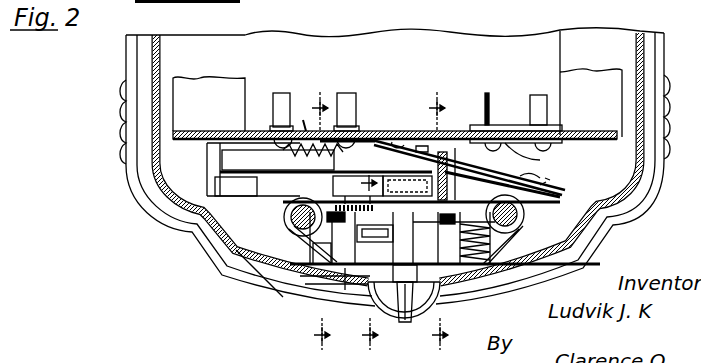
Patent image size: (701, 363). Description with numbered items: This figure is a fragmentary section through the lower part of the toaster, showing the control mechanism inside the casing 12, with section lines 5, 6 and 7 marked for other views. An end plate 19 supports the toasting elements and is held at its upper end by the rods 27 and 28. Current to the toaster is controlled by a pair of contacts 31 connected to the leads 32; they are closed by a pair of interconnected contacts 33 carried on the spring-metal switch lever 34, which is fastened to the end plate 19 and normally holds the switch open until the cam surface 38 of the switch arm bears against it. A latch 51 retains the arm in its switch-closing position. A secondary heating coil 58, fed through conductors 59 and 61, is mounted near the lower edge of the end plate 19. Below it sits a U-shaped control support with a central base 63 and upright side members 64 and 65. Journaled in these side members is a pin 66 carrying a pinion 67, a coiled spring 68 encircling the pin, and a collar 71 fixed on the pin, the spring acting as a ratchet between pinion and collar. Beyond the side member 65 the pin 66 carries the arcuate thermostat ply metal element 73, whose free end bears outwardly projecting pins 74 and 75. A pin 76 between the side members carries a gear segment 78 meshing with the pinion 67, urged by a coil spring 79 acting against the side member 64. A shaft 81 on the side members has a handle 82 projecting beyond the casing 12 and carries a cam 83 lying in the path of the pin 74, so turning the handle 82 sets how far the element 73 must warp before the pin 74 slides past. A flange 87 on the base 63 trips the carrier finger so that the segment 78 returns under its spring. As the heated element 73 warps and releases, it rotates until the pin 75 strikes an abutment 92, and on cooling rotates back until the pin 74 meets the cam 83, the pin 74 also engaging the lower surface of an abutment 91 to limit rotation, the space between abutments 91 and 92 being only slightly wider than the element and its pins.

The section line 5- 5 is at (316, 221).
The section line 6- 6 is at (365, 263).
The section line 7- 7 is at (436, 221).
The casing 12 is at (645, 187).
The end plate 19 is at (592, 136).
The rod 27 is at (524, 212).
The rod 28 is at (292, 216).
The contacts 31 is at (520, 150).
The leads 32 is at (533, 107).
The contacts 33 is at (500, 173).
The switch lever 34 is at (422, 143).
The cam surface 38 is at (452, 169).
The latch 51 is at (465, 238).
The coil 58 is at (305, 121).
The conductor 59 is at (283, 99).
The conductor 61 is at (348, 98).
The central base 63 is at (352, 291).
The upright side member 64 is at (320, 300).
The upright side member 65 is at (358, 190).
The pin 66 is at (283, 297).
The pinion 67 is at (292, 204).
The coiled spring 68 is at (303, 239).
The collar 71 is at (323, 257).
The thermostat ply metal element 73 is at (280, 168).
The pin 74 is at (442, 167).
The pin 75 is at (397, 140).
The pin 76 is at (490, 246).
The gear segment 78 is at (336, 220).
The coil spring 79 is at (513, 230).
The shaft 81 is at (434, 238).
The handle 82 is at (405, 323).
The cam 83 is at (392, 177).
The flange 87 is at (360, 243).
The abutment 91 is at (236, 186).
The abutment 92 is at (222, 158).